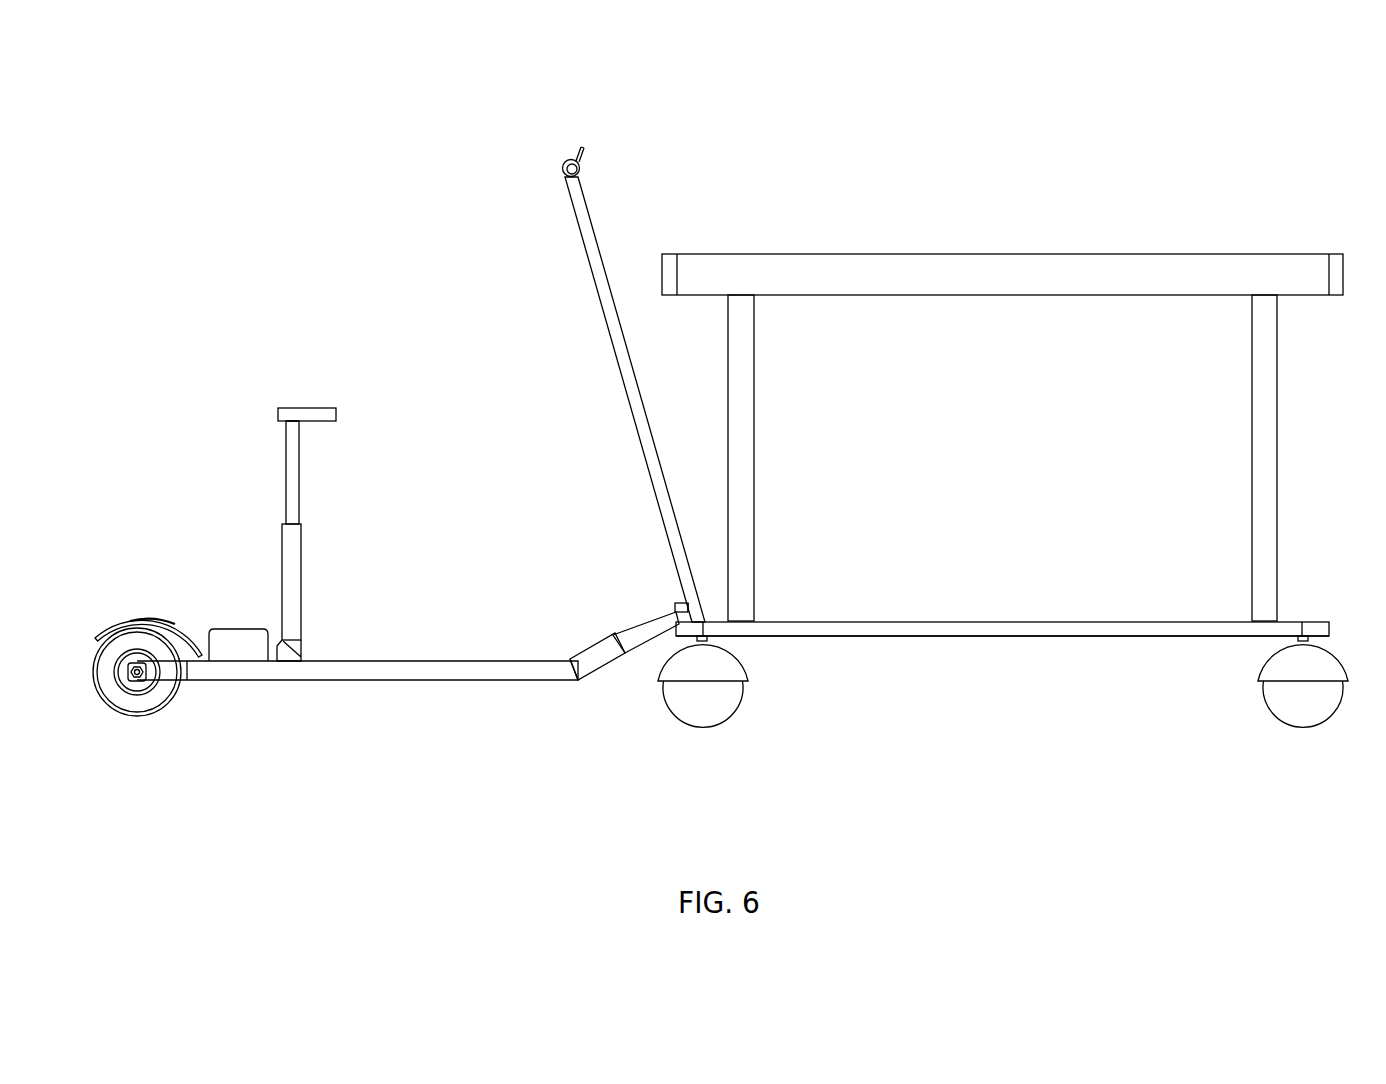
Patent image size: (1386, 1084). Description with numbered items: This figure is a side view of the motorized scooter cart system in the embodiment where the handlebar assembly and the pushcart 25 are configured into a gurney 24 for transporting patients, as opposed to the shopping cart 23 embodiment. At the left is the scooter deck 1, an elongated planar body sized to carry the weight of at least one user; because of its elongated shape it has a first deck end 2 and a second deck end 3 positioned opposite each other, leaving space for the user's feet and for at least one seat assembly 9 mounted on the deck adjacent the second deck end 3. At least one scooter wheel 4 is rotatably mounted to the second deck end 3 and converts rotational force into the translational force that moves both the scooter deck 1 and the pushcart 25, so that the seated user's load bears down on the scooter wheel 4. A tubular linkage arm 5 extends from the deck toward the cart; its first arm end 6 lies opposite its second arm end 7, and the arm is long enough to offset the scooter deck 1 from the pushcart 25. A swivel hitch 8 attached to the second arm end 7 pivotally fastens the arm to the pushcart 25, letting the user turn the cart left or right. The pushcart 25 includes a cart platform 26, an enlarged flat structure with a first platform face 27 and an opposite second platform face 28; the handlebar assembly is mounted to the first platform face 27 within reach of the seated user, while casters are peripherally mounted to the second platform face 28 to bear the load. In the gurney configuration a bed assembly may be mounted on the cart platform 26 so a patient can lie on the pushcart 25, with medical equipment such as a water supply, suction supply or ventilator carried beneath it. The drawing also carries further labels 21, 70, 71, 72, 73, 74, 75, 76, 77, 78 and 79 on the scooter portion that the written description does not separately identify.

The scooter deck 1 is at (648, 635).
The first deck end 2 is at (578, 681).
The second deck end 3 is at (170, 712).
The scooter wheel 4 is at (315, 312).
The linkage arm 5 is at (589, 652).
The first arm end 6 is at (673, 614).
The second arm end 7 is at (428, 668).
The swivel hitch 8 is at (692, 602).
The seat assembly 9 is at (188, 680).
The trolley 21 is at (1022, 450).
The shopping cart 23 is at (987, 198).
The gurney 24 is at (724, 702).
The pushcart 25 is at (1032, 636).
The cart platform 26 is at (1120, 619).
The first platform face 27 is at (150, 618).
The second platform face 28 is at (1125, 636).
The handle grip 70 is at (335, 410).
The steering rod 71 is at (562, 175).
The foot joint 72 is at (300, 656).
The rotary joint 73 is at (553, 135).
The mudguard 74 is at (120, 631).
The battery housing 75 is at (240, 629).
The pin 76 is at (582, 146).
The telescopic tube 77 is at (300, 527).
The wheel hub 78 is at (131, 666).
The handle connection 79 is at (291, 421).